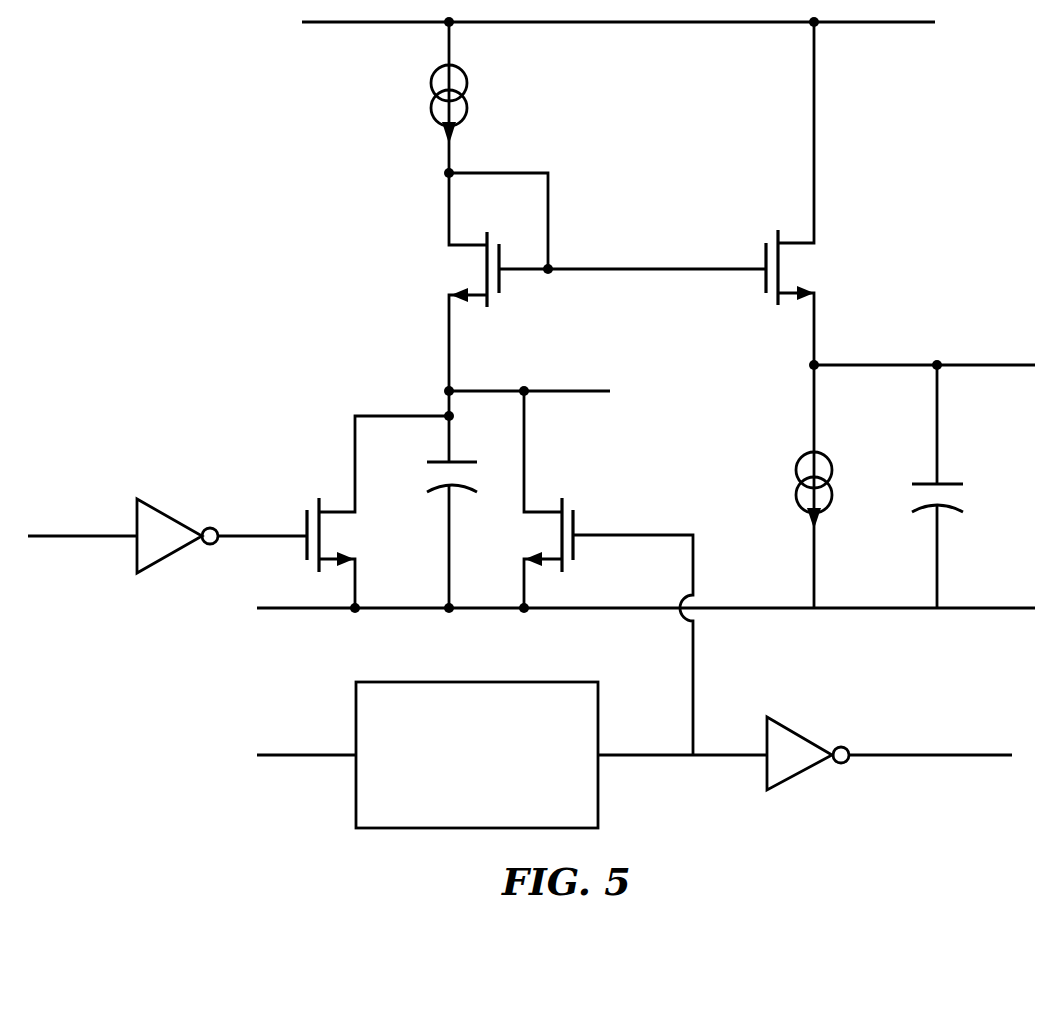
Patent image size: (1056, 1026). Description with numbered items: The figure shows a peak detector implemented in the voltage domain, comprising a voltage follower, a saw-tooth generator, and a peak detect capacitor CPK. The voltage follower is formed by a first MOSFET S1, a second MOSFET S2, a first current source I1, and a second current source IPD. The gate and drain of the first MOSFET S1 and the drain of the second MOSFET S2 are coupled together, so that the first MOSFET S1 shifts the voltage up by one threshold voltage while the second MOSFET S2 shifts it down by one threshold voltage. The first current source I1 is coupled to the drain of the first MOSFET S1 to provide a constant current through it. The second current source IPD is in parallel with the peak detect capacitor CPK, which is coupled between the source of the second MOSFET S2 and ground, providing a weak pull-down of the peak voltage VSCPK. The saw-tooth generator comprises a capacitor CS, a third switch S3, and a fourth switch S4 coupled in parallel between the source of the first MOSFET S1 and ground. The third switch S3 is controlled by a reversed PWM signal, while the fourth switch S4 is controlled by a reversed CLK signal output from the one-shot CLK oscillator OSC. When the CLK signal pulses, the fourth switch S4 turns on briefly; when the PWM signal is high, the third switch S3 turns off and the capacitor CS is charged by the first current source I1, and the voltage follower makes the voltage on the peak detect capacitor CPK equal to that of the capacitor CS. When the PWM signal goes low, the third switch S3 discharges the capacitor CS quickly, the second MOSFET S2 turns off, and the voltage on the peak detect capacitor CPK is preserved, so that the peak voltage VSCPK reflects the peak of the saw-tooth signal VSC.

The first current source I1 is at (434, 100).
The first MOSFET S1 is at (487, 282).
The second MOSFET S2 is at (693, 193).
The third switch S3 is at (333, 512).
The fourth switch S4 is at (606, 573).
The capacitor CS is at (436, 499).
The peak detect capacitor CPK is at (955, 486).
The second current source IPD is at (794, 486).
The saw-tooth signal VSC is at (527, 377).
The peak voltage VSCPK is at (922, 352).
The PWM signal PWM is at (123, 536).
The one-shot CLK oscillator OSC is at (427, 755).
The CLK signal CLK is at (805, 753).